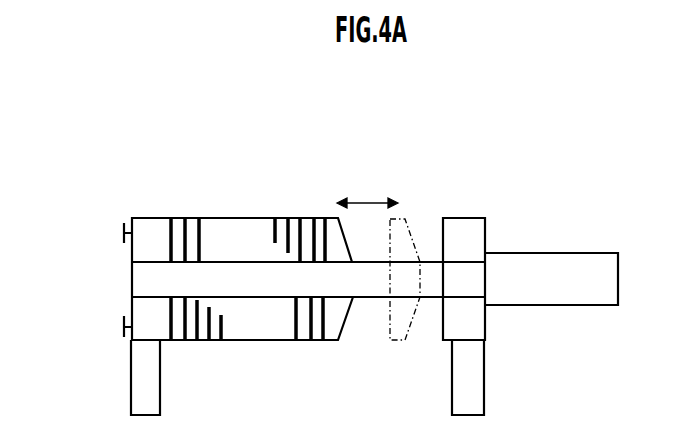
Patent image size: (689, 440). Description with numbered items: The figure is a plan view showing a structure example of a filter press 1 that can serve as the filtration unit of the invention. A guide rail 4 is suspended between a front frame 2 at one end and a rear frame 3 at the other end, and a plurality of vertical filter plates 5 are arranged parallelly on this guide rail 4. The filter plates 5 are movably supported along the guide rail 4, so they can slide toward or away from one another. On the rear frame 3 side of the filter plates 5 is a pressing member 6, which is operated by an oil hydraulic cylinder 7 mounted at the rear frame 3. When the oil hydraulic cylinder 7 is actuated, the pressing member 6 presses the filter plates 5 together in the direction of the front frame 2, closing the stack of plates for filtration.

The filter press 1 is at (350, 160).
The front frame 2 is at (161, 318).
The rear frame 3 is at (470, 317).
The guide rail 4 is at (139, 280).
The filter plates 5 is at (281, 222).
The pressing member 6 is at (333, 330).
The oil hydraulic cylinder 7 is at (608, 277).